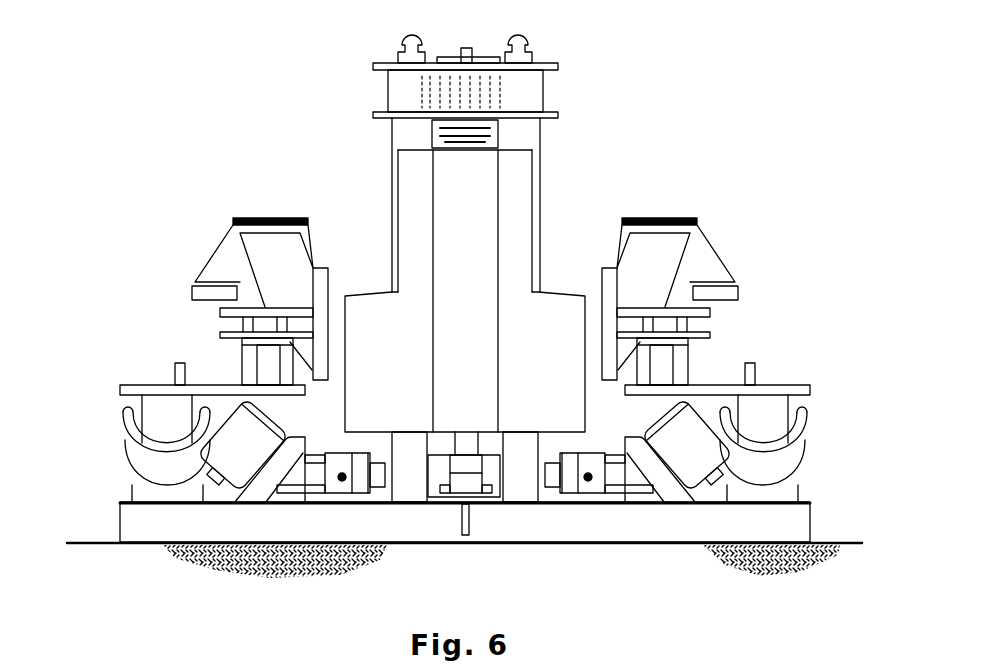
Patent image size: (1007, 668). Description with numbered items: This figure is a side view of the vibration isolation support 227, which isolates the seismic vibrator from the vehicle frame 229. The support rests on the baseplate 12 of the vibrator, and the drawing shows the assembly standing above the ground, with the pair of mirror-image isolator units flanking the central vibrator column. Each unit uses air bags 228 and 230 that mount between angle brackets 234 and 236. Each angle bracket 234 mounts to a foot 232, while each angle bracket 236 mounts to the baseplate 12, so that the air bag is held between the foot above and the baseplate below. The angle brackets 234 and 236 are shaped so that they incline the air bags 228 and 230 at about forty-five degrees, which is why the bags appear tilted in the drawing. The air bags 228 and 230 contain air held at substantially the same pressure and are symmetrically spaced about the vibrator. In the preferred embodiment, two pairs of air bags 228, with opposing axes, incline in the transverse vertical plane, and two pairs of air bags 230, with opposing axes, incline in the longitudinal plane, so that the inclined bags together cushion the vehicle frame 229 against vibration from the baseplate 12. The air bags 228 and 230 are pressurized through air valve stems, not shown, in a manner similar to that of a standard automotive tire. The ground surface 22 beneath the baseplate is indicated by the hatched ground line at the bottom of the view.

The baseplate 12 is at (808, 515).
The floor surface 22 is at (102, 540).
The vibration isolation support 227 is at (488, 588).
The air bag 228 is at (218, 492).
The vehicle frame 229 is at (650, 230).
The air bag 230 is at (123, 460).
The foot 232 is at (148, 387).
The angle bracket 234 is at (235, 390).
The angle bracket 236 is at (265, 490).